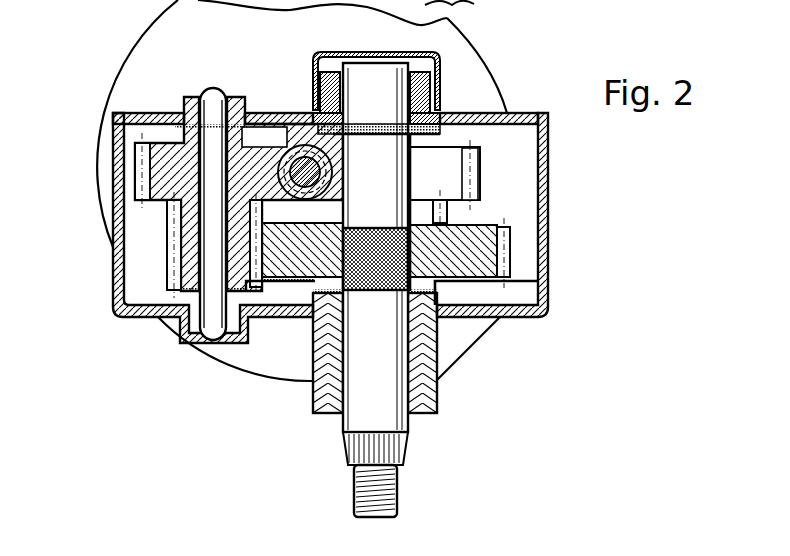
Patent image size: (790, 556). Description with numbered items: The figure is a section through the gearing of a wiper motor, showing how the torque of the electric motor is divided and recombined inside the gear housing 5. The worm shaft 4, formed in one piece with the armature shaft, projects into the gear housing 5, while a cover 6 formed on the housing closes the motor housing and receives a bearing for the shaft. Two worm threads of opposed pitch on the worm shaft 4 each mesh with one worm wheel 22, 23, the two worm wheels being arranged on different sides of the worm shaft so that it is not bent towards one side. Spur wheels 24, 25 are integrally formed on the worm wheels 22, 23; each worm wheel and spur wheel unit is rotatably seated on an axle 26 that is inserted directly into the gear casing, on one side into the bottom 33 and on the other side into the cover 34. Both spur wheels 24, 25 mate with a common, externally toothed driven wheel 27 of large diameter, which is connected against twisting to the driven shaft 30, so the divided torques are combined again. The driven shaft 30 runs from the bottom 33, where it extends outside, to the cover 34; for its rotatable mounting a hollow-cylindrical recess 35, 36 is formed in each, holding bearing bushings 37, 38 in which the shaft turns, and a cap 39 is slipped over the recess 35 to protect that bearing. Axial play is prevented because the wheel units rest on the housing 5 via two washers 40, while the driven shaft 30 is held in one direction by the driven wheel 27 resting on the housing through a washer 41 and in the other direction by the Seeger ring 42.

The worm shaft 4 is at (297, 160).
The gear housing 5 is at (546, 180).
The cover 6 is at (487, 97).
The worm wheel 22 is at (457, 173).
The worm wheel 23 is at (153, 170).
The spur wheel 24 is at (450, 217).
The spur wheel 25 is at (182, 233).
The axle 26 is at (212, 108).
The driven wheel 27 is at (487, 250).
The driven shaft 30 is at (390, 412).
The bottom 33 is at (135, 310).
The cover 34 is at (143, 118).
The hollow-cylindrical recess 35 is at (430, 90).
The hollow-cylindrical recess 36 is at (427, 350).
The bearing bushing 37 is at (410, 55).
The bearing bushing 38 is at (420, 400).
The cap 39 is at (320, 70).
The washer 40 is at (176, 122).
The washer 41 is at (437, 295).
The Seeger ring 42 is at (442, 133).